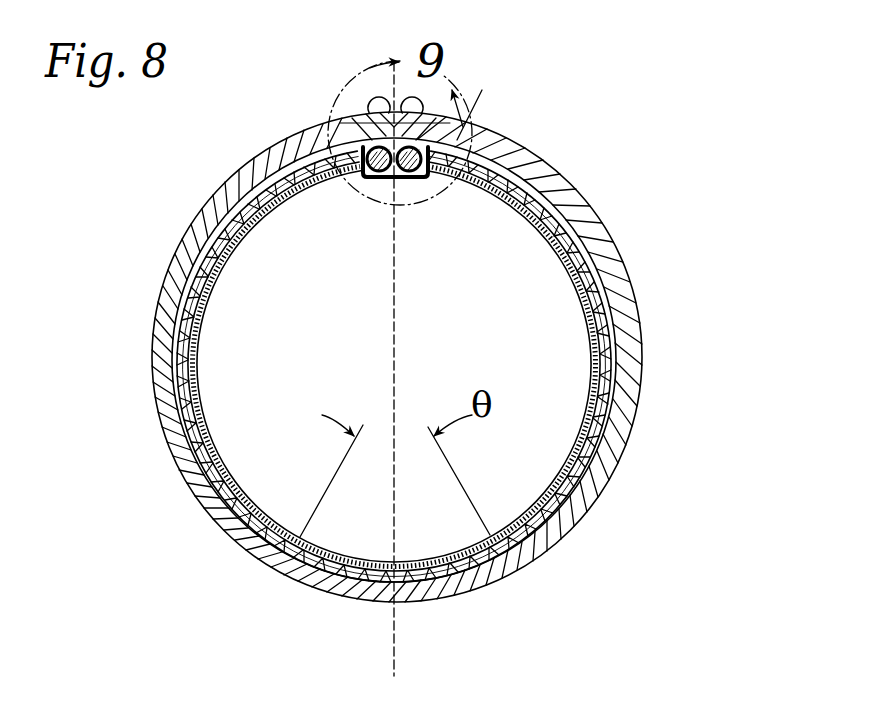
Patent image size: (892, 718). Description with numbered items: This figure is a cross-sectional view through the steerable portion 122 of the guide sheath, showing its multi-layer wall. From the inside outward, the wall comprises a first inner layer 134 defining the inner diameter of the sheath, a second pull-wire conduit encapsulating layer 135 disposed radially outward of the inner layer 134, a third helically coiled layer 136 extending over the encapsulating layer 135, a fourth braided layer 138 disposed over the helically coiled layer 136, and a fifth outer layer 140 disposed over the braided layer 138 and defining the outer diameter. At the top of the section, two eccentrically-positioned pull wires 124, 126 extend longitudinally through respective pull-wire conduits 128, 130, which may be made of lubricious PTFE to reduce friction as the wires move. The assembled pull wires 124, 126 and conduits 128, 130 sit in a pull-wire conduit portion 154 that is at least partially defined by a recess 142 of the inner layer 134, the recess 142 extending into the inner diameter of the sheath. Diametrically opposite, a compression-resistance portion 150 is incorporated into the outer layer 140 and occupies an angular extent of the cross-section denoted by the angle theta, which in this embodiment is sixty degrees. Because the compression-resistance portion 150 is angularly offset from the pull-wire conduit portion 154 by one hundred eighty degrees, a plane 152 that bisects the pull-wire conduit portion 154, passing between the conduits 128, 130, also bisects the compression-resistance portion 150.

The steerable portion 122 is at (168, 220).
The pull wire 124 is at (376, 100).
The pull wire 126 is at (413, 100).
The pull-wire conduit 128 is at (350, 127).
The pull-wire conduit 130 is at (492, 93).
The inner layer 134 is at (578, 273).
The pull-wire conduit encapsulating layer 135 is at (573, 190).
The helically coiled layer 136 is at (578, 230).
The braided layer 138 is at (560, 177).
The outer layer 140 is at (543, 127).
The recess 142 is at (373, 178).
The compression-resistance portion 150 is at (494, 594).
The plane 152 is at (393, 628).
The pull-wire conduit portion 154 is at (408, 184).